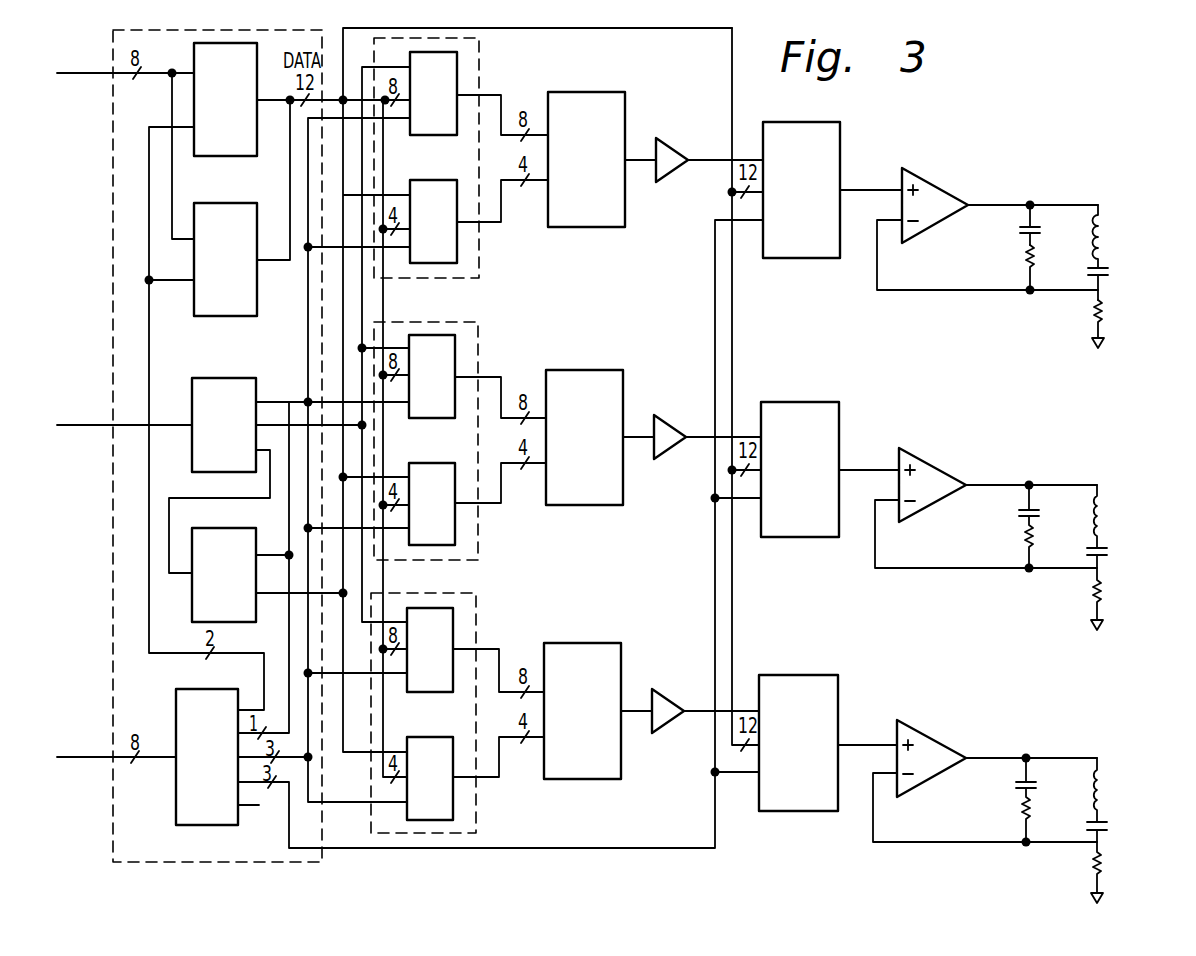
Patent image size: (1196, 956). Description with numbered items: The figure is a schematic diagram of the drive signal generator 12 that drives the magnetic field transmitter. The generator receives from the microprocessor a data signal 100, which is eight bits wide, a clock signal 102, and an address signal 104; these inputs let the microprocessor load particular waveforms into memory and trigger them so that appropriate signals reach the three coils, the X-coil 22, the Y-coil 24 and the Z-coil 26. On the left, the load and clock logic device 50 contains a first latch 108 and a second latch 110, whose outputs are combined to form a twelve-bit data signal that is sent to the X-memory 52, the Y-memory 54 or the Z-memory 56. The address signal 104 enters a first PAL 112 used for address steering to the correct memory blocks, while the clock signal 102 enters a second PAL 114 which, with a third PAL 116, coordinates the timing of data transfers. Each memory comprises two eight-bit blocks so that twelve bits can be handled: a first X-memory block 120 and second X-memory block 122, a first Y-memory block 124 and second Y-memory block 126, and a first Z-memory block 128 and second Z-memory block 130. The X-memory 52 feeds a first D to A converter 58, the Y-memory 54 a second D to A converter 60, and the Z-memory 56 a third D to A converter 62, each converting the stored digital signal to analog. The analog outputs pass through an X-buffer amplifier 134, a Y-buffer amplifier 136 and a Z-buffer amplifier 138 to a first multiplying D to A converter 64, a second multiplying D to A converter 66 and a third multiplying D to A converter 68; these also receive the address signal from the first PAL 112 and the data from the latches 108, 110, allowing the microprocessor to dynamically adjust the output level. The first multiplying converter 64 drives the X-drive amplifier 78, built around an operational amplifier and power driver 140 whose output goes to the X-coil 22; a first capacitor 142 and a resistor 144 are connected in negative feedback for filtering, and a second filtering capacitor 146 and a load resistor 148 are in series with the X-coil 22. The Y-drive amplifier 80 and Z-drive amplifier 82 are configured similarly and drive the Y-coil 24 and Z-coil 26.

The drive signal generator 12 is at (955, 97).
The X-coil 22 is at (1104, 236).
The Y-coil 24 is at (1103, 518).
The Z-coil 26 is at (1103, 793).
The load and clock logic device 50 is at (150, 28).
The X-memory 52 is at (479, 40).
The Y-memory 54 is at (478, 331).
The Z-memory 56 is at (476, 602).
The first D to A converter 58 is at (600, 92).
The second D to A converter 60 is at (608, 370).
The third D to A converter 62 is at (605, 643).
The first multiplying D to A converter 64 is at (778, 122).
The second multiplying D to A converter 66 is at (777, 402).
The third multiplying D to A converter 68 is at (775, 675).
The X-drive amplifier 78 is at (1023, 257).
The Y-drive amplifier 80 is at (1017, 533).
The Z-drive amplifier 82 is at (1016, 807).
The data signal 100 is at (76, 74).
The clock signal 102 is at (76, 426).
The address signal 104 is at (75, 757).
The first latch 108 is at (194, 62).
The second latch 110 is at (217, 203).
The first PAL 112 is at (196, 689).
The second PAL 114 is at (214, 378).
The third PAL 116 is at (220, 528).
The first X-memory block 120 is at (457, 72).
The second X-memory block 122 is at (457, 253).
The first Y-memory block 124 is at (455, 355).
The second Y-memory block 126 is at (455, 533).
The first Z-memory block 128 is at (453, 628).
The second Z-memory block 130 is at (453, 807).
The X-buffer amplifier 134 is at (672, 146).
The Y-buffer amplifier 136 is at (670, 423).
The Z-buffer amplifier 138 is at (662, 702).
The operational amplifier and power driver 140 is at (935, 178).
The first capacitor 142 is at (1020, 229).
The resistor 144 is at (1022, 264).
The second filtering capacitor 146 is at (1108, 270).
The load resistor 148 is at (1104, 312).